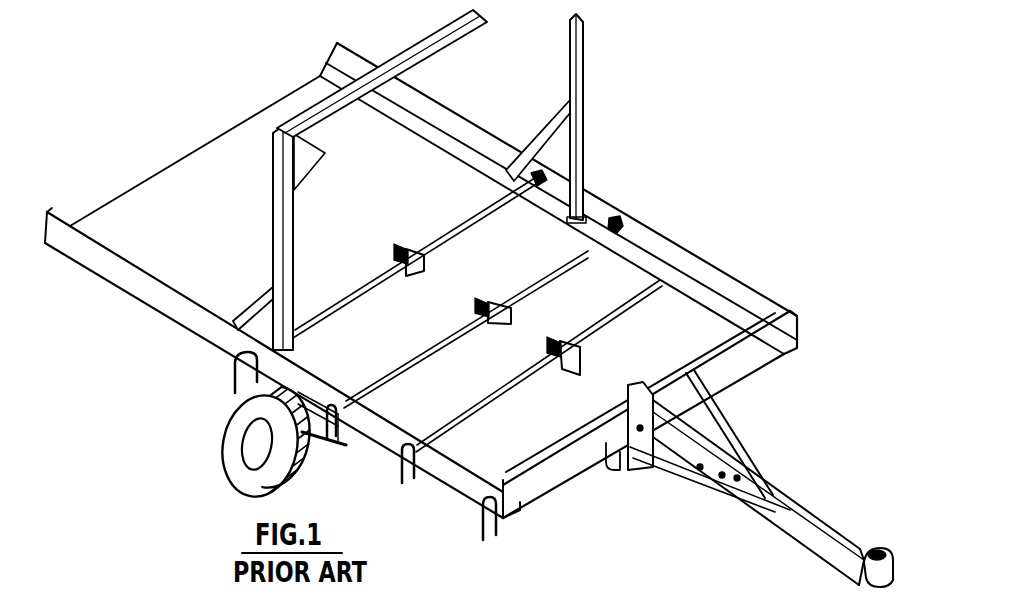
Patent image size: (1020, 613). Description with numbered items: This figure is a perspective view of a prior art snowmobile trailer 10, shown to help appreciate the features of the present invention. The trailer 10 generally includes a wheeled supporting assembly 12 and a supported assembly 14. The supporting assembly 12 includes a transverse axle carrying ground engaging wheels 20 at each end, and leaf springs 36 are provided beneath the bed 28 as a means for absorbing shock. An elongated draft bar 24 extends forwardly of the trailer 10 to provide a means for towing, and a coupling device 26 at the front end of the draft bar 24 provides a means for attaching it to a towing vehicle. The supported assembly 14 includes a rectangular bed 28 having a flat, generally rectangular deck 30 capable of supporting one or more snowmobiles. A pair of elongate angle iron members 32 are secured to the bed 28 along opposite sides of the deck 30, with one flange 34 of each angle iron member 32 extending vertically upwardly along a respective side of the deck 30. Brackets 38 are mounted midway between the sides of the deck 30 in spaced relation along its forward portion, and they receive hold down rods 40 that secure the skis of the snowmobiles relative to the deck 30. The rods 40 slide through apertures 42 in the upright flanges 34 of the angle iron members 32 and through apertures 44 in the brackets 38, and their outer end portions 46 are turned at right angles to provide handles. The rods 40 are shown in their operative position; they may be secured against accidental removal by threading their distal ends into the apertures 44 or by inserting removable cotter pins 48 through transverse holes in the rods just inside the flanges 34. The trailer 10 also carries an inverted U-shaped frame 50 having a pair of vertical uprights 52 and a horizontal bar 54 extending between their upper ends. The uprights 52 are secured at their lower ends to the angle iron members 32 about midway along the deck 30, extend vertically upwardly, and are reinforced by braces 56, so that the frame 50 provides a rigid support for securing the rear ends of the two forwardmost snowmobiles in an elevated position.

The Prior Art trailer 10 is at (465, 298).
The wheeled supporting assembly 12 is at (220, 428).
The supported assembly 14 is at (415, 293).
The ground engaging wheels 20 is at (249, 443).
The elongated draft bar 24 is at (735, 477).
The coupling device 26 is at (883, 536).
The rectangular bed 28 is at (195, 151).
The deck 30 is at (163, 270).
The angle iron members 32 is at (421, 280).
The flange 34 is at (561, 303).
The leaf springs 36 is at (296, 426).
The brackets 38 is at (477, 299).
The hold down rods 40 is at (482, 311).
The apertures 42 is at (583, 409).
The apertures 44 is at (503, 258).
The outer end portions 46 is at (403, 463).
The cotter pins 48 is at (643, 214).
The inverted U-shaped frame 50 is at (442, 179).
The vertical uprights 52 is at (430, 182).
The horizontal bar 54 is at (382, 73).
The braces 56 is at (394, 208).